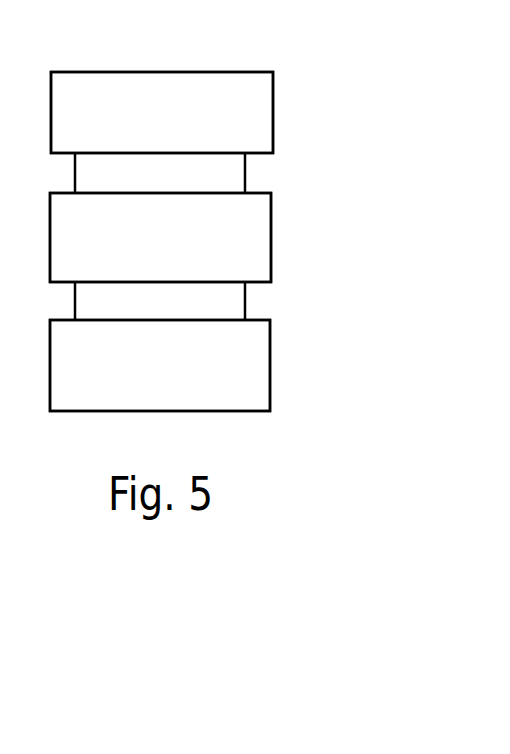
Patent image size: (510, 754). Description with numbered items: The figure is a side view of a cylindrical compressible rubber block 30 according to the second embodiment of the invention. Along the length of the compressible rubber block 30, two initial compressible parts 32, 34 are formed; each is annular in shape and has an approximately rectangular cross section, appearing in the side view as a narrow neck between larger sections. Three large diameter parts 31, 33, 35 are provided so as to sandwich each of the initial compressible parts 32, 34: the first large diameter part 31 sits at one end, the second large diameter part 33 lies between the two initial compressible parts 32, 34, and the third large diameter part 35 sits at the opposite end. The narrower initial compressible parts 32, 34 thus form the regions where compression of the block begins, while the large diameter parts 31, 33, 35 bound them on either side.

The compressible rubber block 30 is at (290, 67).
The large diameter part 31 is at (262, 125).
The initial compressible part 32 is at (240, 176).
The large diameter part 33 is at (262, 248).
The initial compressible part 34 is at (240, 306).
The large diameter part 35 is at (263, 370).